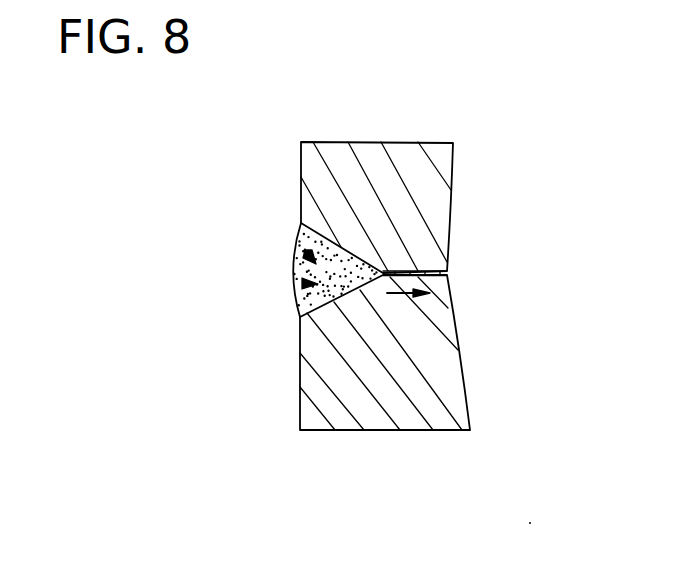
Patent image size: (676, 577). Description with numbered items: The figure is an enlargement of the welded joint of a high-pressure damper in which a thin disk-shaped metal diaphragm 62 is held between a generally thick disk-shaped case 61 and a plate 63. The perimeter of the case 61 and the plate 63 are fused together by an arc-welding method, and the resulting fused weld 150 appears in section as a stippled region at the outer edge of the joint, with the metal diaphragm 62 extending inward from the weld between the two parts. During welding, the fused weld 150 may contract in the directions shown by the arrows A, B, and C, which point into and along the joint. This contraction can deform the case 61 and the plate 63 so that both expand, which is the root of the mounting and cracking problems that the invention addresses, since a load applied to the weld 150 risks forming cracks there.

The case 61 is at (388, 168).
The plate 63 is at (455, 386).
The metal diaphragm 62 is at (372, 280).
The weld 150 is at (297, 305).
The arrow A is at (293, 248).
The arrow B is at (297, 293).
The arrow C is at (426, 297).